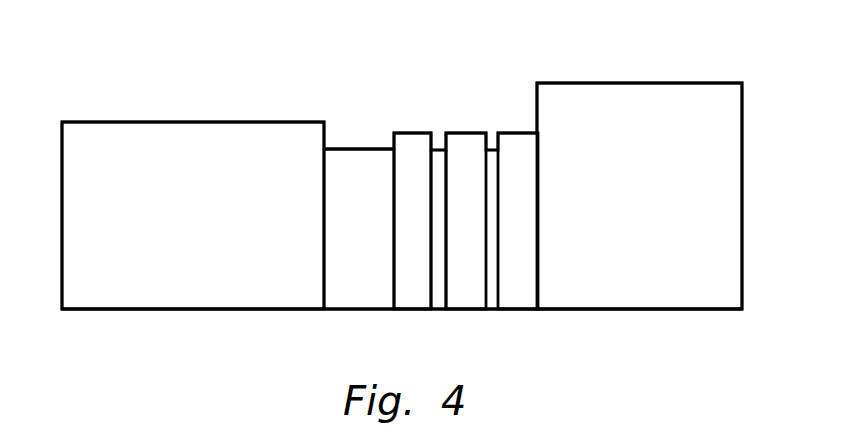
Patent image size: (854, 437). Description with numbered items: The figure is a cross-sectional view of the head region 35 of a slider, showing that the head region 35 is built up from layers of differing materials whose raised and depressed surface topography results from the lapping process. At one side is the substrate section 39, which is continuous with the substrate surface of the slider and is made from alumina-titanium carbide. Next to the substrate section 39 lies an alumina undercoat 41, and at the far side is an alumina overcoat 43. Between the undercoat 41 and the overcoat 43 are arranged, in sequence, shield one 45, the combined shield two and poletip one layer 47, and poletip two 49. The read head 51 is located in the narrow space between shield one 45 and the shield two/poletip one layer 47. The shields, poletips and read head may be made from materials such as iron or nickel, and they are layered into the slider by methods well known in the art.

The head region 35 is at (233, 70).
The substrate section 39 is at (167, 295).
The alumina undercoat 41 is at (345, 298).
The alumina overcoat 43 is at (688, 298).
The shield 1 45 is at (407, 297).
The shield 2/poletip 1 47 is at (468, 297).
The poletip 2 49 is at (525, 297).
The read head 51 is at (438, 148).